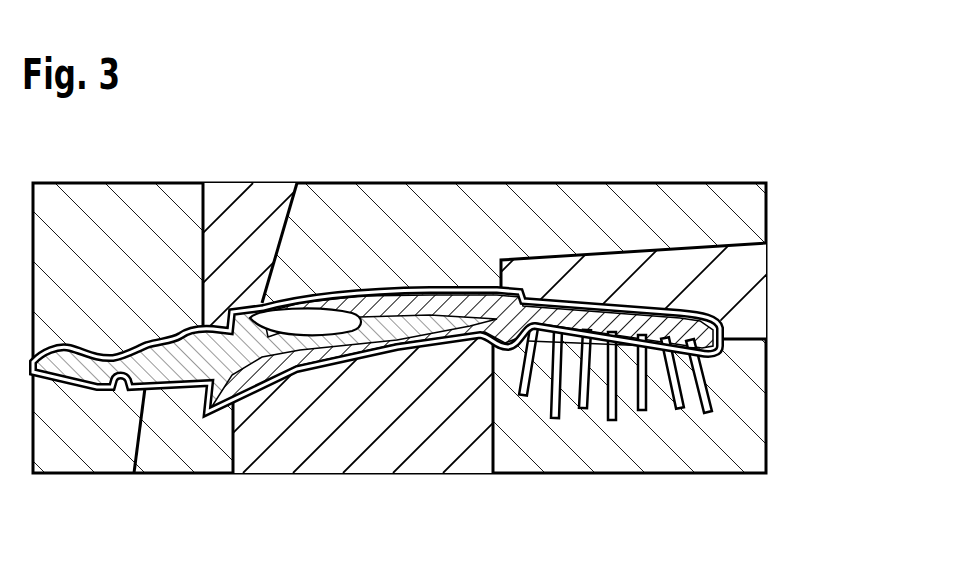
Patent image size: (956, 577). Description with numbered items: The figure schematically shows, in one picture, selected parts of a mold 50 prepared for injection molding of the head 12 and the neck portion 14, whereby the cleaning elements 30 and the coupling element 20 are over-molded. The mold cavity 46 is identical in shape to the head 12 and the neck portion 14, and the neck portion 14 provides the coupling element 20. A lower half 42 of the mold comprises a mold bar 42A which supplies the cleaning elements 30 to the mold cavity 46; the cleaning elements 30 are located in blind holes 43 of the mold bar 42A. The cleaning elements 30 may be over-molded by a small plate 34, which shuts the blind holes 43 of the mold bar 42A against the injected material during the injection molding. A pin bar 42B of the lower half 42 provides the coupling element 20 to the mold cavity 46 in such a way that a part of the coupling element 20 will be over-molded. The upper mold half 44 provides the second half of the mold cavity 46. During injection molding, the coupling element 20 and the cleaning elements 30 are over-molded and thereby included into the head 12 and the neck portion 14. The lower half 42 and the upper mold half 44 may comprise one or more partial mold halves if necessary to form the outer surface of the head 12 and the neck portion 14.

The head 12 is at (650, 317).
The neck portion 14 is at (397, 327).
The coupling element 20 is at (233, 360).
The cleaning elements 30 is at (683, 413).
The plate 34 is at (657, 350).
The lower half 42 is at (772, 412).
The mold bar 42A is at (570, 437).
The pin bar 42B is at (90, 447).
The blind holes 43 is at (543, 402).
The upper mold half 44 is at (772, 272).
The mold cavity 46 is at (593, 296).
The mold 50 is at (724, 154).